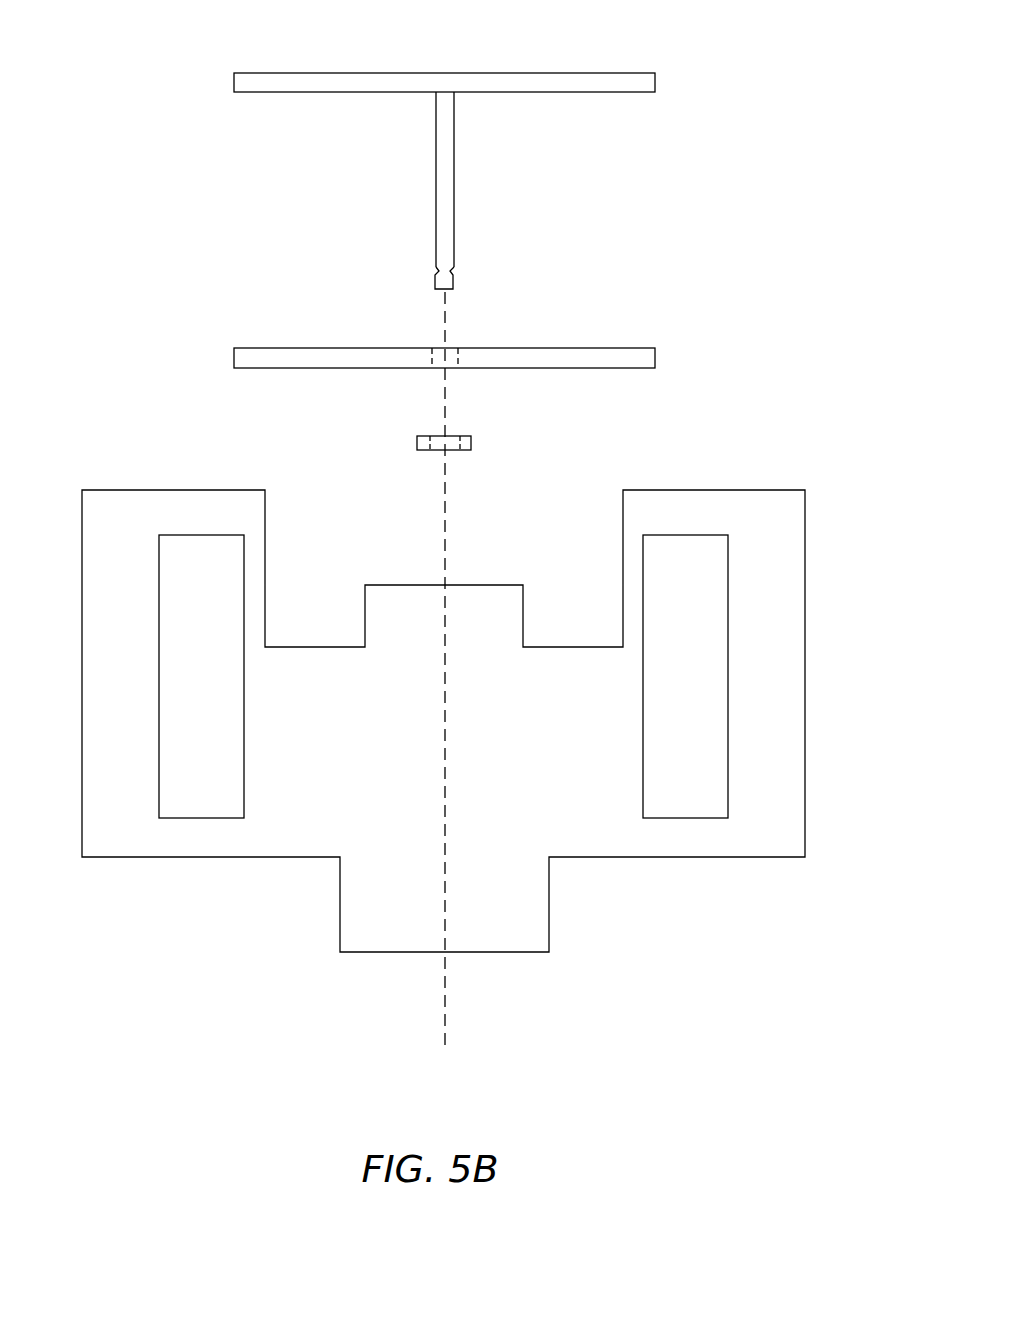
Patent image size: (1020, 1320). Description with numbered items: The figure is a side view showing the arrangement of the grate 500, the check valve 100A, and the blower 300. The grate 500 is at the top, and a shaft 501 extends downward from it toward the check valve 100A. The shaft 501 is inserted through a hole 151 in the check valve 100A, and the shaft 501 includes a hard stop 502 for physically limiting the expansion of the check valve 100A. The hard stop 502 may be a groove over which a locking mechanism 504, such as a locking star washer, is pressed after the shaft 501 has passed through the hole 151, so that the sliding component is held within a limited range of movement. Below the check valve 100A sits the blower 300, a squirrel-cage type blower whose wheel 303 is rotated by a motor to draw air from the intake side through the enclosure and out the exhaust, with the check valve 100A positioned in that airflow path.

The grate 500 is at (210, 85).
The shaft 501 is at (436, 178).
The hard stop 502 is at (455, 270).
The check valve 100A is at (680, 357).
The hole 151 is at (444, 348).
The locking mechanism 504 is at (471, 442).
The blower 300 is at (766, 450).
The wheel 303 is at (203, 818).